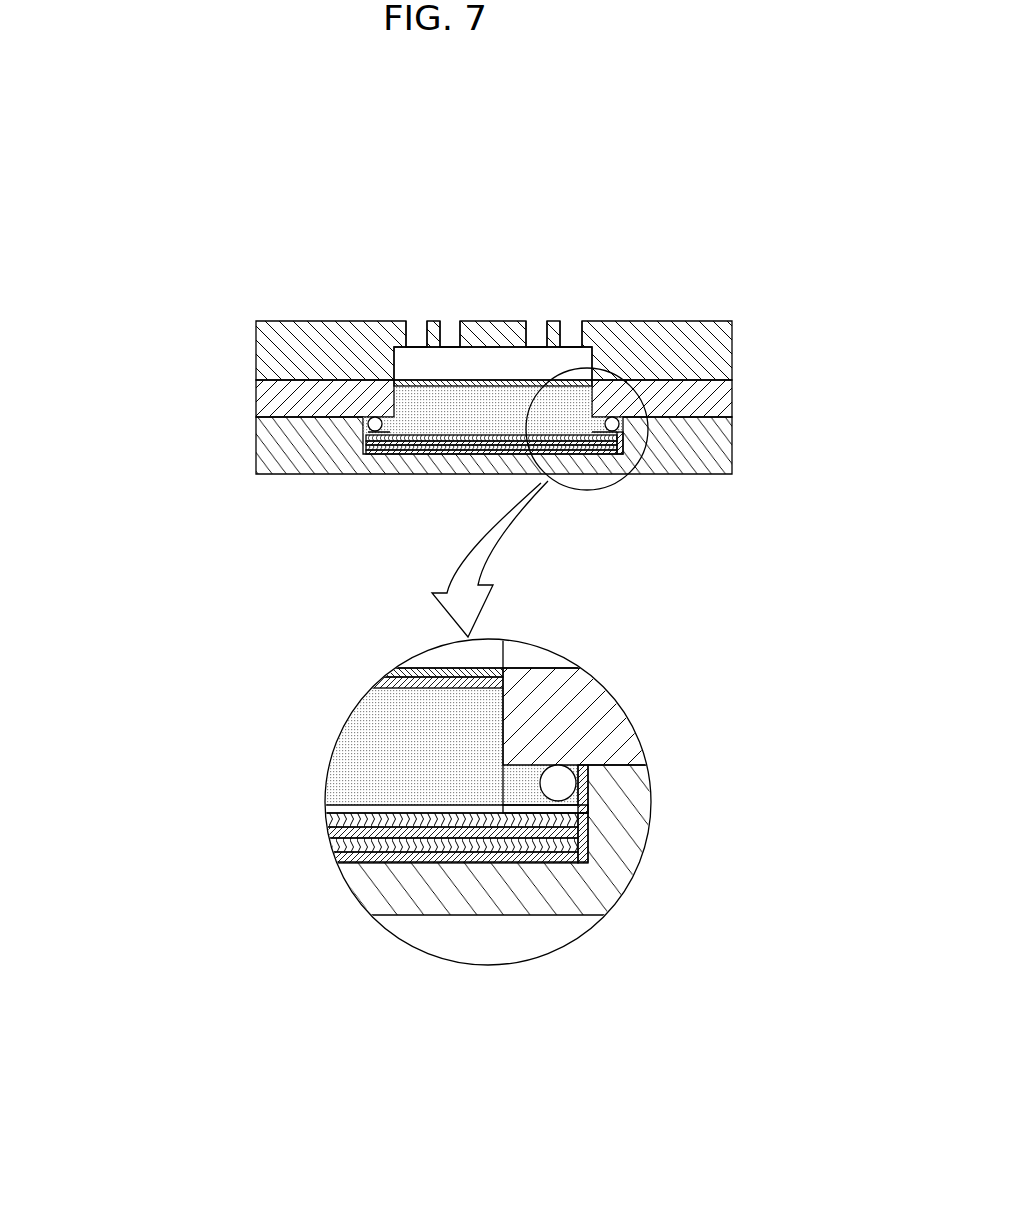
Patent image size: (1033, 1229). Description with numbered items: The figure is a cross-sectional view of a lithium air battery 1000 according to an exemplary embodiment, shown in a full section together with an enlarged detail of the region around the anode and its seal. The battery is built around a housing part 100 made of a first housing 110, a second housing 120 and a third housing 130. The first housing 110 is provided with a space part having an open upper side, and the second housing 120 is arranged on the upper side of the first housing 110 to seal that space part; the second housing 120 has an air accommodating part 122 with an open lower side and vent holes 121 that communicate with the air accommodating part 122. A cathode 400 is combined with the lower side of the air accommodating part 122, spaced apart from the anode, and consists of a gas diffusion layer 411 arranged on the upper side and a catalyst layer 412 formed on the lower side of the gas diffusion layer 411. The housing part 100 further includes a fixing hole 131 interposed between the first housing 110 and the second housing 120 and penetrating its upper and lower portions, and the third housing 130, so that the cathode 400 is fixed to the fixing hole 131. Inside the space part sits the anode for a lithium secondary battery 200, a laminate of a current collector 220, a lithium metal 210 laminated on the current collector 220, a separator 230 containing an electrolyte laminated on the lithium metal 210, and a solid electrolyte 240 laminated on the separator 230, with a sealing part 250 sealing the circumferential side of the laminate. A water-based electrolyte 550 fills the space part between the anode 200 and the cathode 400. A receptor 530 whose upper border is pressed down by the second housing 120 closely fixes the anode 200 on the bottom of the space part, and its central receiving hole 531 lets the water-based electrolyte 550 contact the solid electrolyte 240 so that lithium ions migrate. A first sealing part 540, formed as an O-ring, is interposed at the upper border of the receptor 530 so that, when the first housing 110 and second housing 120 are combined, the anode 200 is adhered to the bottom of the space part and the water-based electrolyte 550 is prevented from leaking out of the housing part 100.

The lithium air battery 1000 is at (712, 182).
The housing part 100 is at (178, 342).
The first housing 110 is at (257, 446).
The second housing 120 is at (257, 349).
The vent hole 121 is at (448, 320).
The air accommodating part 122 is at (616, 320).
The third housing 130 is at (257, 391).
The fixing hole 131 is at (443, 408).
The anode for a lithium secondary battery 200 is at (693, 1000).
The lithium metal 210 is at (500, 846).
The current collector 220 is at (560, 857).
The separator 230 is at (452, 835).
The solid electrolyte 240 is at (403, 822).
The sealing part 250 is at (586, 835).
The cathode 400 is at (267, 618).
The gas diffusion layer 411 is at (400, 669).
The catalyst layer 412 is at (402, 681).
The receptor 530 is at (563, 780).
The receiving hole 531 is at (510, 808).
The first sealing part 540 is at (565, 768).
The water-based electrolyte 550 is at (432, 735).